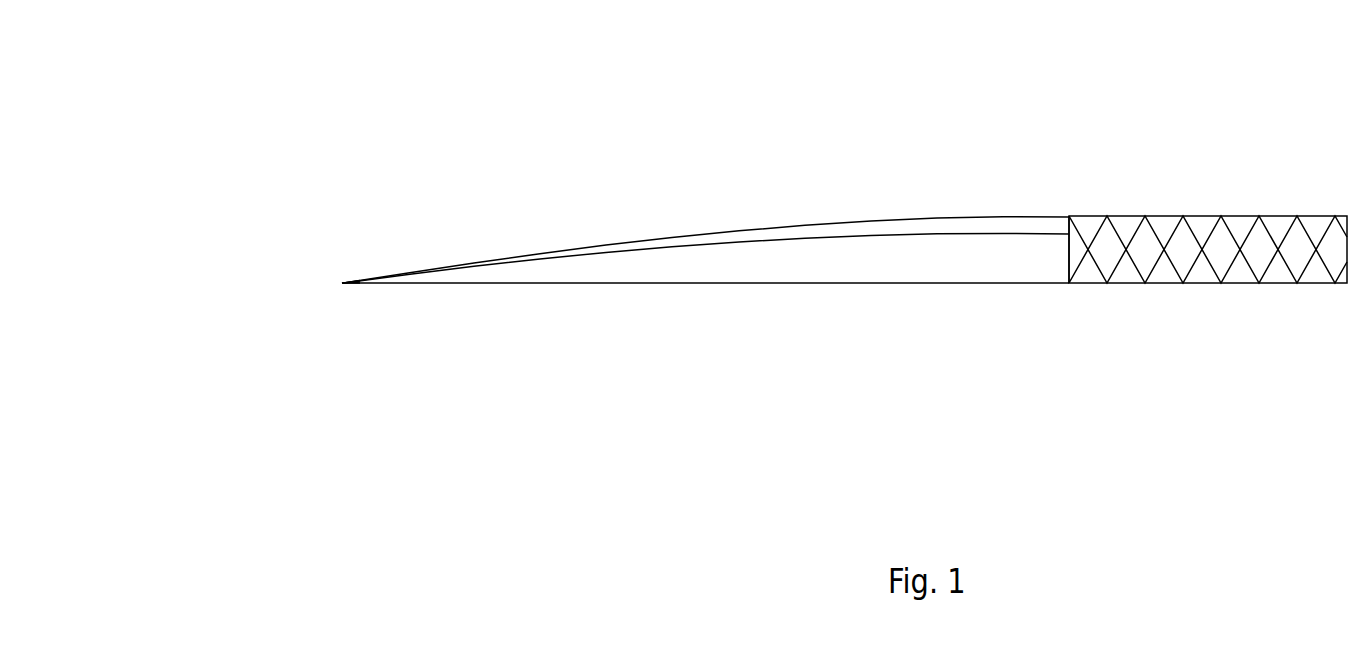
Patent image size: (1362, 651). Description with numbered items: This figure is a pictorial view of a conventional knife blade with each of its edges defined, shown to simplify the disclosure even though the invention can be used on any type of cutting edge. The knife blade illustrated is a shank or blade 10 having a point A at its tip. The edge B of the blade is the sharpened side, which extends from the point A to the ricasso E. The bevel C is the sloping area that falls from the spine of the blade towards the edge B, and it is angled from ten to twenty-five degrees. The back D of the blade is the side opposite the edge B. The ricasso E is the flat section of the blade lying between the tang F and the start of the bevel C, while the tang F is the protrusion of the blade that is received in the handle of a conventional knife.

The blade 10 is at (750, 249).
The point A is at (332, 284).
The edge B is at (678, 221).
The bevel C is at (923, 230).
The back D is at (829, 303).
The ricasso E is at (1068, 198).
The tang F is at (1207, 253).